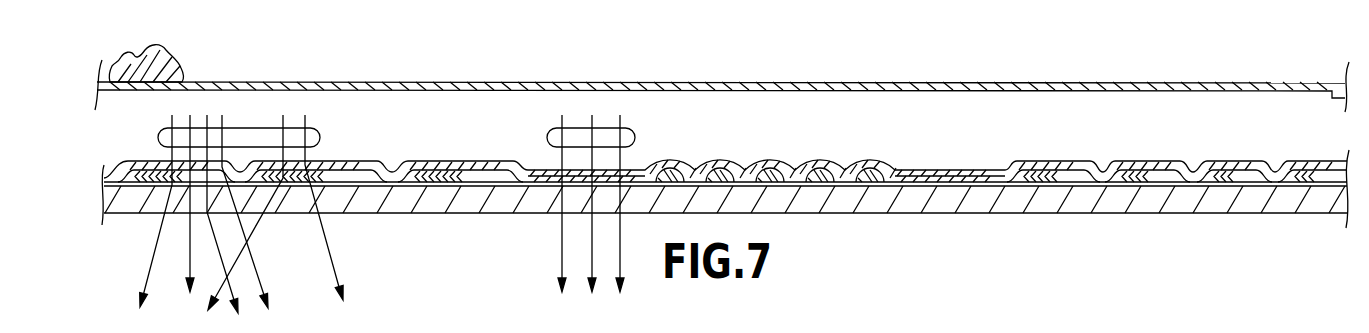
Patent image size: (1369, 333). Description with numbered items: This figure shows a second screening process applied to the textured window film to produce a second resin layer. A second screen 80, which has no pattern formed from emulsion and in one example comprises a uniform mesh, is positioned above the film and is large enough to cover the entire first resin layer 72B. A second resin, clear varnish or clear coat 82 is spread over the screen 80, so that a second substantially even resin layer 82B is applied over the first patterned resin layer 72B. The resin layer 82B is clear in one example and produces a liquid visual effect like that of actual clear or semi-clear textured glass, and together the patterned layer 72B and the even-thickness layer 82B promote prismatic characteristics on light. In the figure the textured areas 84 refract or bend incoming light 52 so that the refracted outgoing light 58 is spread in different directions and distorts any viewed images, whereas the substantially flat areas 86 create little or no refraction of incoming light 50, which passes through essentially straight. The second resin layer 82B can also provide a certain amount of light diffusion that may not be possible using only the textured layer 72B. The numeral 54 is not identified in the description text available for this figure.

The incoming light 50 is at (637, 137).
The incoming light 52 is at (158, 137).
The deposition assembly 54 is at (270, 46).
The refracted outgoing light 58 is at (331, 242).
The first resin layer 72B is at (463, 183).
The second screen 80 is at (430, 82).
The second resin 82 is at (157, 46).
The second resin layer 82B is at (1033, 161).
The textured areas 84 is at (351, 161).
The substantially flat areas 86 is at (545, 170).